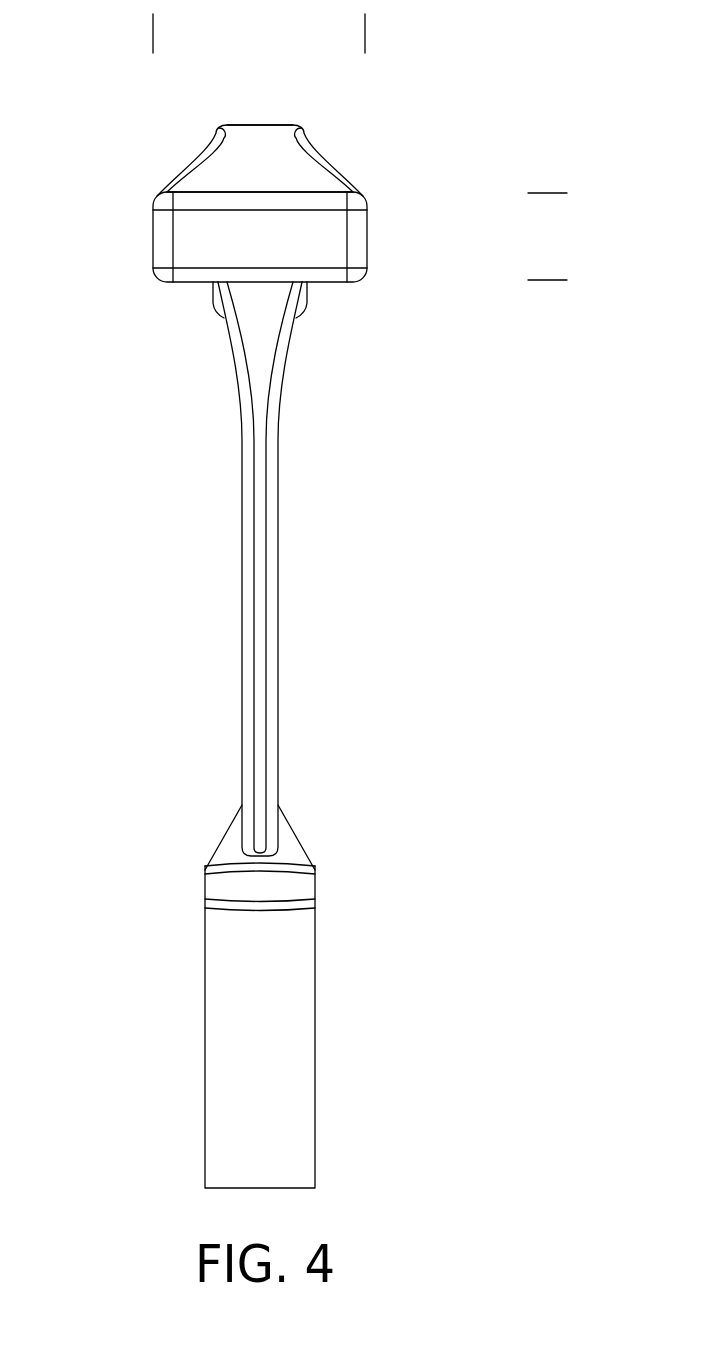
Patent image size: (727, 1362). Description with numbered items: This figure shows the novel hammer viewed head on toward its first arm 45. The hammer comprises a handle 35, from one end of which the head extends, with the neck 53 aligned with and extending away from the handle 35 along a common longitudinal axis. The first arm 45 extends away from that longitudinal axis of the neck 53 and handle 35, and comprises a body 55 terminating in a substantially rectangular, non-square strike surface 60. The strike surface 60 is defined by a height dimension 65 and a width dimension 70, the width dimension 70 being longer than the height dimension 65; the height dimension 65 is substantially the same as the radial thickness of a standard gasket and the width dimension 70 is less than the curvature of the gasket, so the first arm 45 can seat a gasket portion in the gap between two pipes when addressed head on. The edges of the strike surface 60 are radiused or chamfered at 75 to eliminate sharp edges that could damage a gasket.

The handle 35 is at (316, 1032).
The first arm 45 is at (139, 263).
The neck 53 is at (279, 555).
The body 55 is at (368, 236).
The substantially rectangular, non-square strike surface 60 is at (303, 242).
The height dimension 65 is at (548, 195).
The width dimension 70 is at (155, 33).
The radiused or chamfered edges 75 is at (322, 192).